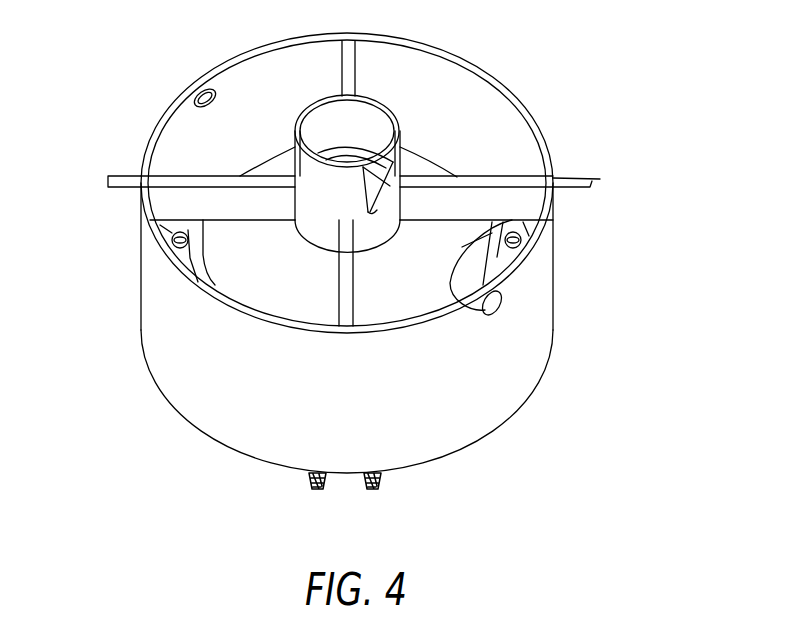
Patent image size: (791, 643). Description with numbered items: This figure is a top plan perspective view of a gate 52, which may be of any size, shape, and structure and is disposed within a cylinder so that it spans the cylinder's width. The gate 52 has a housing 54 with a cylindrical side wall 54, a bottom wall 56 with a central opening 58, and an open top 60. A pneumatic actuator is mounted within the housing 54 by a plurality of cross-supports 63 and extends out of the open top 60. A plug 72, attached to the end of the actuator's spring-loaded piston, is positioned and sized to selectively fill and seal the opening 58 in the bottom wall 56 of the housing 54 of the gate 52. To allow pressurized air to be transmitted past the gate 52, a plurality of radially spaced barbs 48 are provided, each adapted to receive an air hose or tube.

The barbs 48 is at (142, 220).
The gate 52 is at (644, 88).
The housing 54 is at (412, 256).
The bottom wall 56 is at (347, 429).
The central opening 58 is at (553, 262).
The open top 60 is at (381, 183).
The cross-supports 63 is at (355, 181).
The plug 72 is at (400, 183).